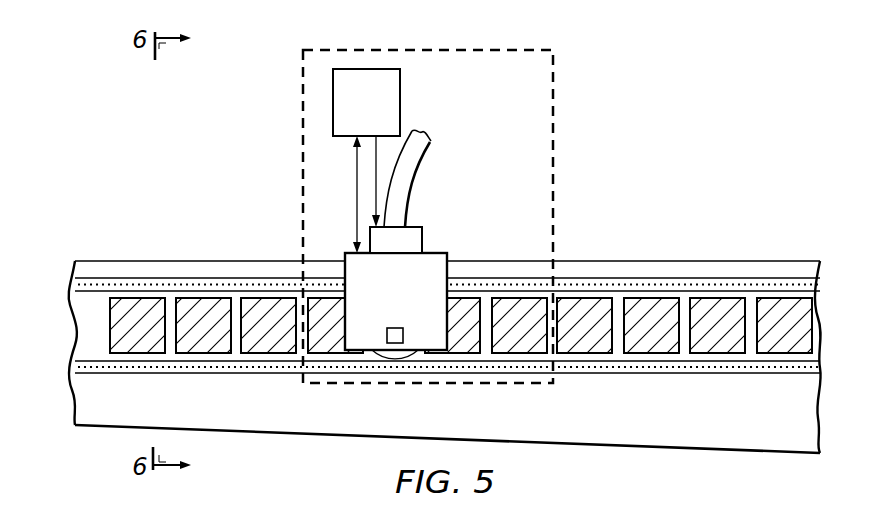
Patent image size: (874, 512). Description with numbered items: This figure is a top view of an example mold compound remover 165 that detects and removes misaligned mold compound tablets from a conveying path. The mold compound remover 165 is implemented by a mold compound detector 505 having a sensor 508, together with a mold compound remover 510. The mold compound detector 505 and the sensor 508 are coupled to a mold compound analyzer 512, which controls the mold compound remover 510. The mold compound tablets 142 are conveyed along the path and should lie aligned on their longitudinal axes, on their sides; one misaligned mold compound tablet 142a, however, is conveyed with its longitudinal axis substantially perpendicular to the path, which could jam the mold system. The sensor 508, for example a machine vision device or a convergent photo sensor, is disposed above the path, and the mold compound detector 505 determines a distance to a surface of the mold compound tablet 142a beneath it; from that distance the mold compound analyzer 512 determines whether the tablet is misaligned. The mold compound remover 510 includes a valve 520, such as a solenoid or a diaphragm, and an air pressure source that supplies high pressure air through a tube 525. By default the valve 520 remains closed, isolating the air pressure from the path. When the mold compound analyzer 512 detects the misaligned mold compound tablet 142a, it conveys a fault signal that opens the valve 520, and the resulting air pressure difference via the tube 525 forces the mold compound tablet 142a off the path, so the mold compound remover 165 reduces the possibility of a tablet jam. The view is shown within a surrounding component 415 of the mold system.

The substrate / panel 415 is at (75, 318).
The mold compound tablets 142 is at (142, 348).
The misaligned mold compound tablet 142a is at (395, 355).
The mold compound remover 165 is at (664, 109).
The mold compound detector 505 is at (433, 258).
The sensor 508 is at (397, 327).
The valve 520 is at (422, 236).
The mold compound remover 510 is at (430, 193).
The tube 525 is at (428, 137).
The mold compound analyzer 512 is at (385, 114).